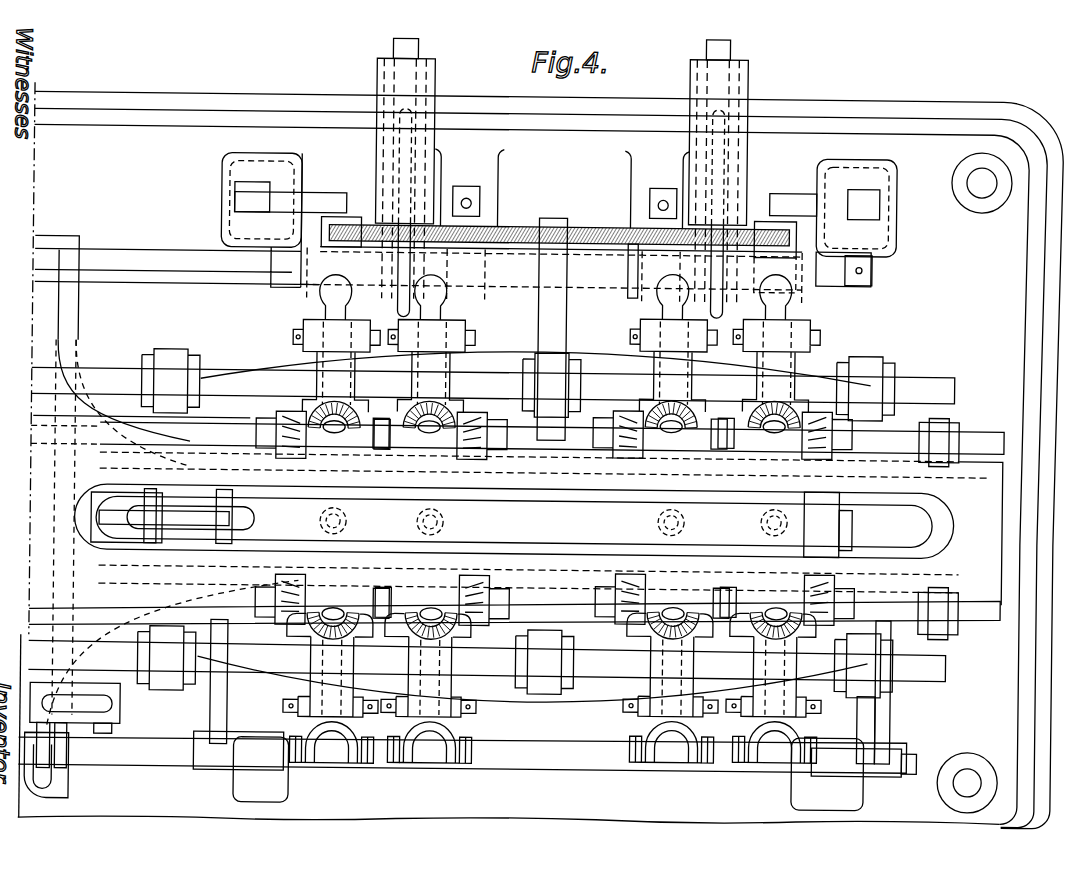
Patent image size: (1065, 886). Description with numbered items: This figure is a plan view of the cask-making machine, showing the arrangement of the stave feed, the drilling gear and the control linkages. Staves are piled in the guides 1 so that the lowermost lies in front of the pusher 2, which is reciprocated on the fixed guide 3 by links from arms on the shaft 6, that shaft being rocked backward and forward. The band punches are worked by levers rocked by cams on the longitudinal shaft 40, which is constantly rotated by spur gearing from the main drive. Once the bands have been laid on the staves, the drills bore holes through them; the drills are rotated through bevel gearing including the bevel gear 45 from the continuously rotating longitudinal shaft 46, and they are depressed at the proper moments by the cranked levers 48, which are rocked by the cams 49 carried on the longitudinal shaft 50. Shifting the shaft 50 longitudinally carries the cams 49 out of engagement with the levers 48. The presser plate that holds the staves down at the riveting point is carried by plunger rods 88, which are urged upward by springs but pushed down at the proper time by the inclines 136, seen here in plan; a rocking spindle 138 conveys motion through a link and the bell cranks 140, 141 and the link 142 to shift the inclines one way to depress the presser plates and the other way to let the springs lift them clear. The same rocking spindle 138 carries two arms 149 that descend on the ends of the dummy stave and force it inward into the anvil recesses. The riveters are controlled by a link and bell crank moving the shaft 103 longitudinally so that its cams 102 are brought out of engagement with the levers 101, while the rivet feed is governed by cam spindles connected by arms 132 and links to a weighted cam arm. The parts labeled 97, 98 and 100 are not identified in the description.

The guides 1 is at (770, 212).
The pusher 2 is at (748, 45).
The fixed guide 3 is at (690, 88).
The shaft 6 is at (597, 278).
The longitudinal shaft 40 is at (806, 278).
The bevel gear 45 is at (800, 417).
The longitudinal shaft 46 is at (982, 440).
The cranked levers 48 is at (777, 293).
The cams 49 is at (800, 322).
The longitudinal shaft 50 is at (920, 385).
The plunger rods 88 is at (760, 520).
The bevel gear 97 is at (785, 640).
The shaft 98 is at (977, 610).
The bolt 100 is at (763, 757).
The levers 101 is at (791, 727).
The cams 102 is at (670, 660).
The shaft 103 is at (927, 673).
The arms 132 is at (33, 694).
The inclines 136 is at (514, 521).
The rocking spindle 138 is at (536, 762).
The bell crank 140 is at (78, 752).
The bell crank 141 is at (163, 508).
The link 142 is at (180, 520).
The arms 149 is at (893, 718).